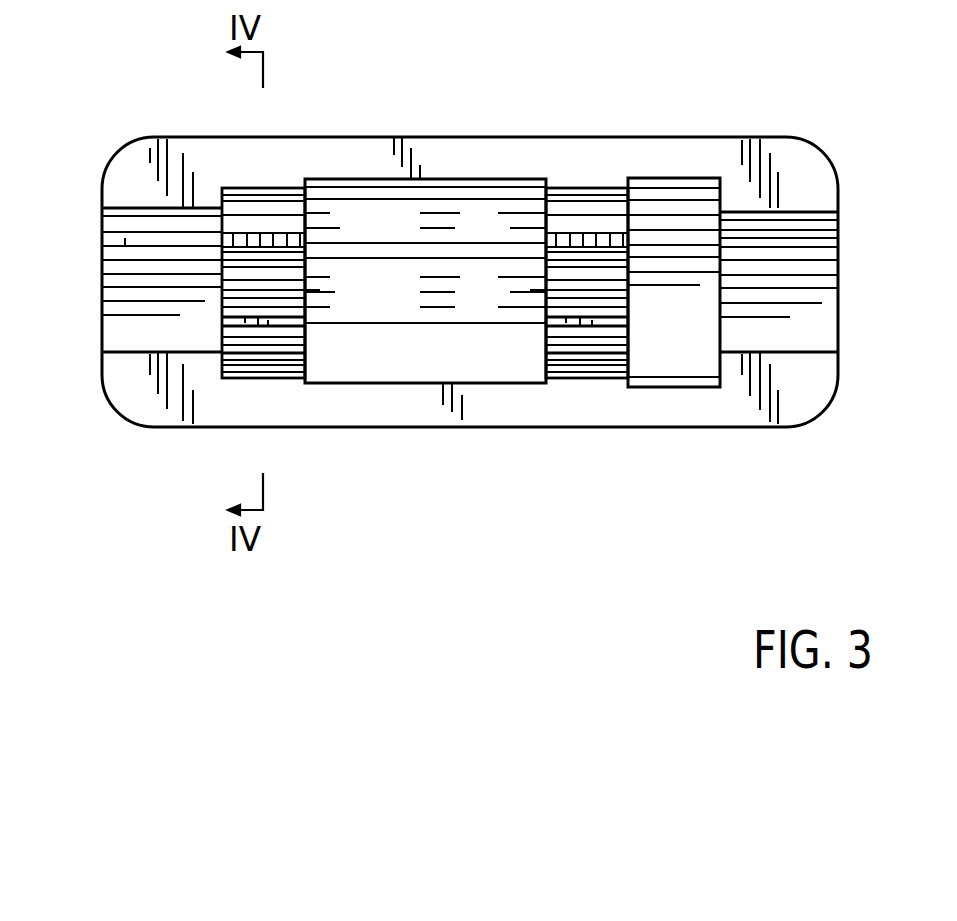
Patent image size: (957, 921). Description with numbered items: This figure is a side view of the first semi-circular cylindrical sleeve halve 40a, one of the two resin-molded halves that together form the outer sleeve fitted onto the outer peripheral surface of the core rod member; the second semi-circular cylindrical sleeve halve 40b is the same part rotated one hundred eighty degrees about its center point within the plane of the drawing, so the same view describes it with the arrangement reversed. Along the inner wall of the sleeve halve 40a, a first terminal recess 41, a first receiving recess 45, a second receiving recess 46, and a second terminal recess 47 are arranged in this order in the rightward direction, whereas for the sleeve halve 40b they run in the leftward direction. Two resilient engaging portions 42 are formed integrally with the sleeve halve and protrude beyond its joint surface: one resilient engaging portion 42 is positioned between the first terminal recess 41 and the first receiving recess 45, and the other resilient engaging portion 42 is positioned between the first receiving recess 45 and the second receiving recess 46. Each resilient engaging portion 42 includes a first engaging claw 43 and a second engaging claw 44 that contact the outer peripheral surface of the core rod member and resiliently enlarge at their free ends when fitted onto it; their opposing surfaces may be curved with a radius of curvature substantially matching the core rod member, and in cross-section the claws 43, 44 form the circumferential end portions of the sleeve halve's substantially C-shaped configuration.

The first semi-circular cylindrical sleeve halve 40a is at (470, 239).
The second semi-circular cylindrical sleeve halve 40b is at (515, 136).
The first terminal recess 41 is at (135, 324).
The resilient engaging portion 42 is at (248, 357).
The first engaging claw 43 is at (307, 346).
The second engaging claw 44 is at (290, 213).
The first receiving recess 45 is at (425, 344).
The second receiving recess 46 is at (673, 348).
The second terminal recess 47 is at (780, 300).